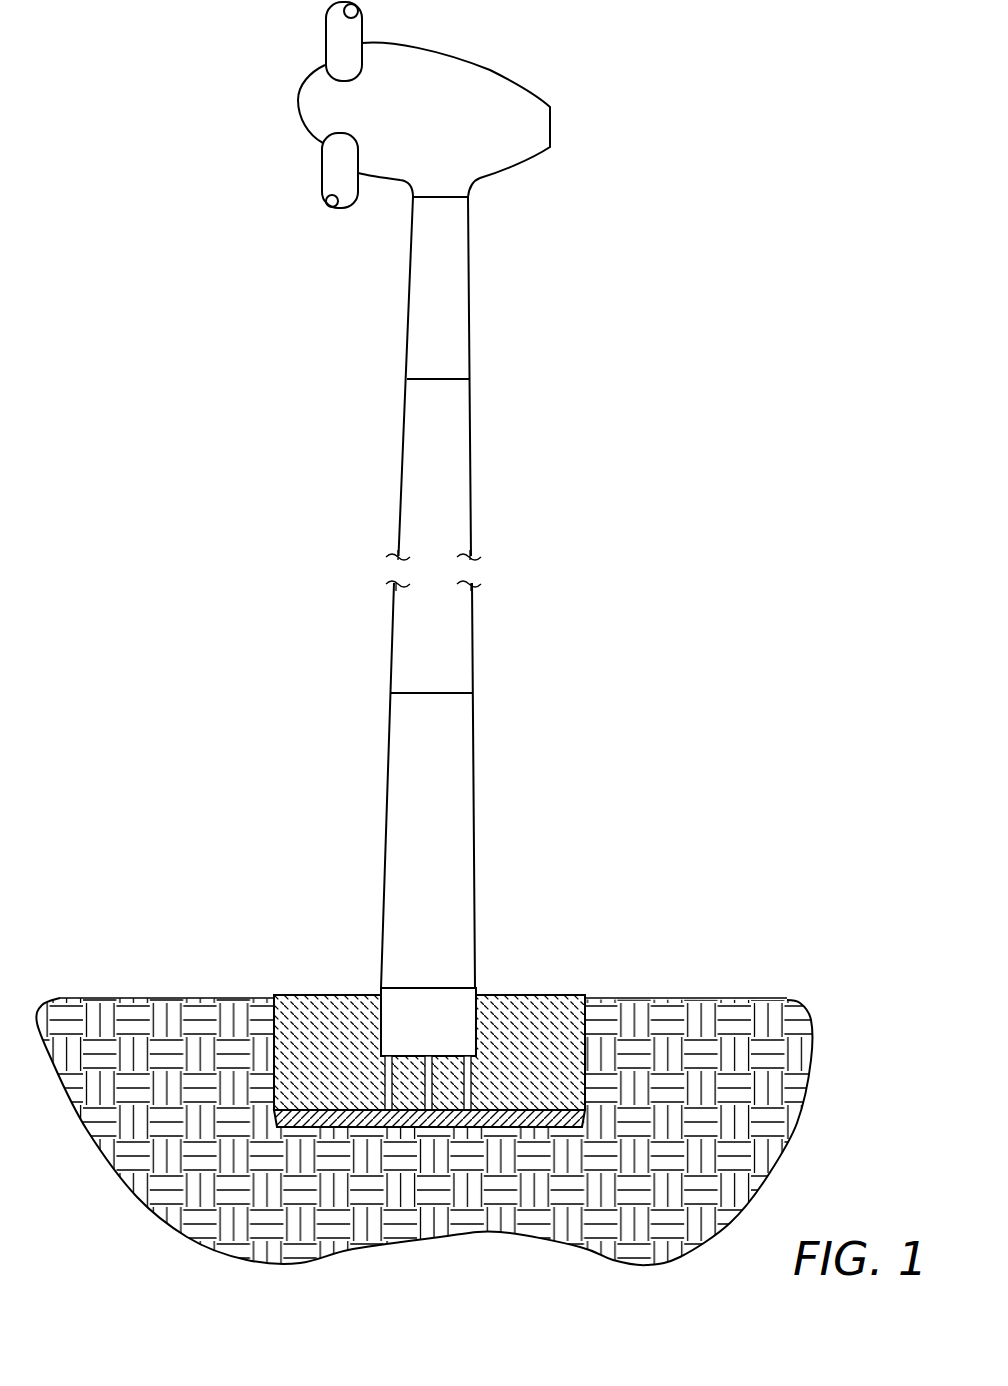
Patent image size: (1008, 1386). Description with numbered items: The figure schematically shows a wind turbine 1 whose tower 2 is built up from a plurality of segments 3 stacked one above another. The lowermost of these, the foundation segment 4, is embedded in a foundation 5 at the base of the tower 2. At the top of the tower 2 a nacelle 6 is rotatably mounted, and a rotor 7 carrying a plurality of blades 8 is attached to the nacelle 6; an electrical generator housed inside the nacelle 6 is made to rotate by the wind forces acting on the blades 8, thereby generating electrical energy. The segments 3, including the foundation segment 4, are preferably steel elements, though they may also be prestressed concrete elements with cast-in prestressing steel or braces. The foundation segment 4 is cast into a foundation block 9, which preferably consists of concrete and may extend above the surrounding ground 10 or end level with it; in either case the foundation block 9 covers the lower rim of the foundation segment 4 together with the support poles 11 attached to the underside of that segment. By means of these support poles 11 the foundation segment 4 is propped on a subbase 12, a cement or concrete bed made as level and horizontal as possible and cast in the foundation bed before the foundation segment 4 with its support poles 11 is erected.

The wind turbine 1 is at (205, 328).
The tower 2 is at (370, 592).
The segments 3 is at (452, 325).
The foundation segment 4 is at (452, 998).
The foundation 5 is at (470, 1010).
The nacelle 6 is at (537, 125).
The rotor 7 is at (330, 107).
The blades 8 is at (353, 25).
The foundation block 9 is at (293, 1008).
The ground 10 is at (120, 1025).
The support poles 11 is at (467, 1077).
The subbase 12 is at (555, 1118).